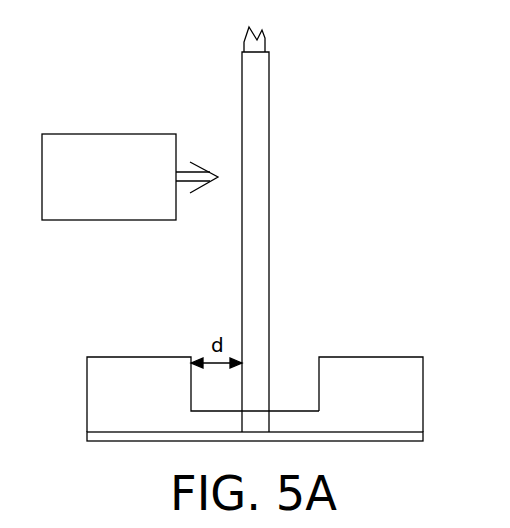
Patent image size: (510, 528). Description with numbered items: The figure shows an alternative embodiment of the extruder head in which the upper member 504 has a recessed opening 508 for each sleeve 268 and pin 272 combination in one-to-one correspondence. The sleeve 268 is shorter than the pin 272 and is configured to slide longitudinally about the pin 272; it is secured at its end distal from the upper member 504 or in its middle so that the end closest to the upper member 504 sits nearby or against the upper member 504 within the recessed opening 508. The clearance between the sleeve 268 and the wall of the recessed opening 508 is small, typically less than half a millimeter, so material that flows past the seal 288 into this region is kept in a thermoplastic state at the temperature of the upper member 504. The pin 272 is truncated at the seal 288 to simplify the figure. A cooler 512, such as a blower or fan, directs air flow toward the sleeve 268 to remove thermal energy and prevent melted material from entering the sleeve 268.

The cooler 512 is at (109, 134).
The pin 272 is at (265, 40).
The sleeve 268 is at (270, 173).
The upper member 504 is at (139, 357).
The recessed opening 508 is at (291, 370).
The seal 288 is at (381, 432).